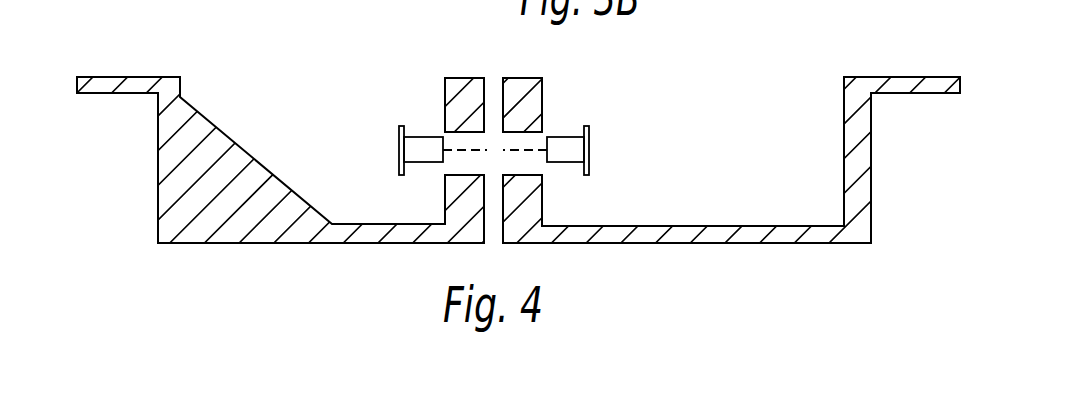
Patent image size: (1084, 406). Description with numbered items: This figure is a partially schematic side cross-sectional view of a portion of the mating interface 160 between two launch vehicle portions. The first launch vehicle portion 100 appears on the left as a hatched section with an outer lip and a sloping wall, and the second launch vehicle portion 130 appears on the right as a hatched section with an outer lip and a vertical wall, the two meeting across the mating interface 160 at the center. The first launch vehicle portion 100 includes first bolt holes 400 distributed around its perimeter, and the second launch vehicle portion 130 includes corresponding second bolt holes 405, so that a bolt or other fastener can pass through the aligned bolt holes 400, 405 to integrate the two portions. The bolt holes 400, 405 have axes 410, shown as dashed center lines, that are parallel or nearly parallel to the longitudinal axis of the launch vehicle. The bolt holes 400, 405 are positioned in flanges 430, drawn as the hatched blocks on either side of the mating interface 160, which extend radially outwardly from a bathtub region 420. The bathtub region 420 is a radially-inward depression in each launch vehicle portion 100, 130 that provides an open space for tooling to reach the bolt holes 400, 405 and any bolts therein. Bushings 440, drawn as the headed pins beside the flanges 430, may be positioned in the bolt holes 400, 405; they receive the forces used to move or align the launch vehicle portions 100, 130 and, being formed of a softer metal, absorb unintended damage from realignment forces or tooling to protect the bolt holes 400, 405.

The first launch vehicle portion 100 is at (208, 225).
The second launch vehicle portion 130 is at (722, 235).
The mating interface 160 is at (487, 62).
The first bolt holes 400 is at (483, 158).
The second bolt holes 405 is at (525, 160).
The axes 410 is at (447, 140).
The bathtub region 420 is at (332, 160).
The flanges 430 is at (455, 98).
The bushings 440 is at (425, 148).